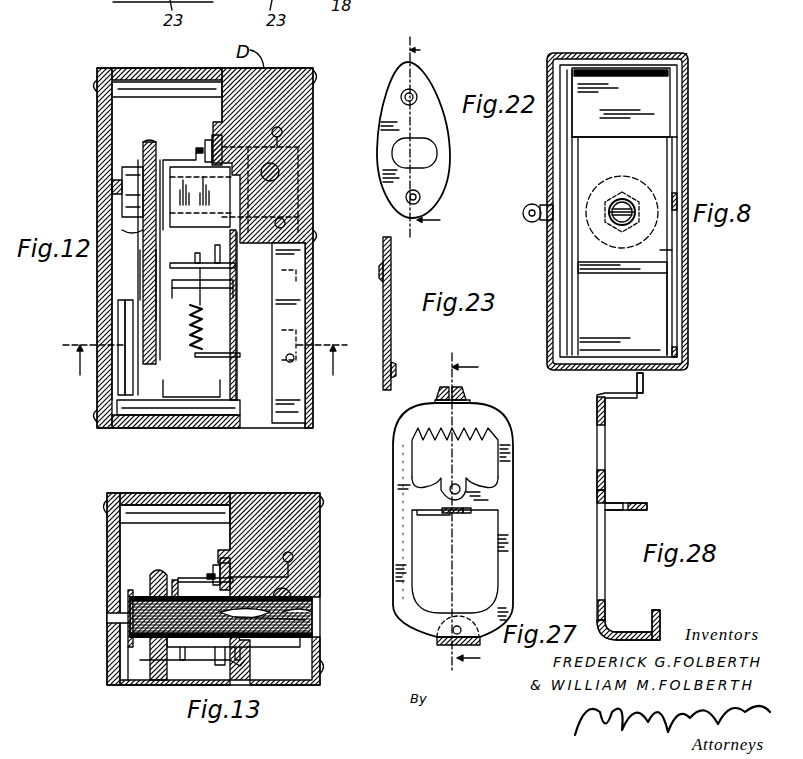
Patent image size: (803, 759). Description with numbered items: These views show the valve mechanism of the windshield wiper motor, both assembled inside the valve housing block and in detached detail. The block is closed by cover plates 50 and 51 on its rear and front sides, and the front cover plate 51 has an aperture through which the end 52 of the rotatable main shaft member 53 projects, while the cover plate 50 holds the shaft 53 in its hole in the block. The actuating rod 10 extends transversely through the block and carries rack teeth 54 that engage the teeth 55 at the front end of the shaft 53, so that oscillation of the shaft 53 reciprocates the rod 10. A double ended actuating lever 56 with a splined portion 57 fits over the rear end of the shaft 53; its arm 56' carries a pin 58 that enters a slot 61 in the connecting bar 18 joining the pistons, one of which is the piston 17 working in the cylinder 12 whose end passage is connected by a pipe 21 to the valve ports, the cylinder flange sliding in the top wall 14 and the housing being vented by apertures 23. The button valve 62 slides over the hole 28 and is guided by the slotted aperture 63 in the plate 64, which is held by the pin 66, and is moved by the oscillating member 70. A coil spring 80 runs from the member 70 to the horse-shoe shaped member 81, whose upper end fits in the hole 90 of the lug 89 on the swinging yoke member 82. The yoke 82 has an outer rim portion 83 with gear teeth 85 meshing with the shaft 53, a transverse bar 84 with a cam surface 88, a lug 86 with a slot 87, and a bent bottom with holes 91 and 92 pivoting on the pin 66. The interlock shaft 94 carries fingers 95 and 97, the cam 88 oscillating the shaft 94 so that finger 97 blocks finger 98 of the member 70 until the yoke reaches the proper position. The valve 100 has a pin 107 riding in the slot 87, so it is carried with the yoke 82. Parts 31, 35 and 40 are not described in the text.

In FIG. 12, the actuating rod 10 is at (313, 156).
In FIG. 13, the actuating rod 10 is at (312, 580).
In FIG. 8, the cylinder 12 is at (630, 53).
In FIG. 12, the top wall 14 is at (204, 364).
In FIG. 8, the piston 17 is at (645, 110).
In FIG. 12, the connecting bar 18 is at (145, 288).
In FIG. 13, the connecting bar 18 is at (128, 676).
In FIG. 8, the connecting bar 18 is at (688, 200).
In FIG. 8, the pipe 21 is at (528, 222).
In FIG. 22, the aperture 23 is at (425, 139).
In FIG. 27, the hole 28 is at (469, 514).
In FIG. 12, the wall 31 is at (313, 190).
In FIG. 12, the screw 35 is at (282, 132).
In FIG. 13, the screw 35 is at (293, 557).
In FIG. 12, the plate 40 is at (305, 243).
In FIG. 12, the cover plate 50 is at (313, 108).
In FIG. 13, the cover plate 50 is at (321, 522).
In FIG. 12, the cover plate 51 is at (97, 134).
In FIG. 13, the cover plate 51 is at (107, 528).
In FIG. 12, the end of main shaft 52 is at (112, 188).
In FIG. 13, the end of main shaft 52 is at (107, 618).
In FIG. 12, the main shaft member 53 is at (147, 170).
In FIG. 13, the main shaft member 53 is at (250, 625).
In FIG. 12, the teeth 54 is at (279, 172).
In FIG. 13, the teeth 54 is at (312, 612).
In FIG. 13, the teeth 55 is at (312, 634).
In FIG. 12, the actuating lever 56 is at (95, 200).
In FIG. 12, the arm of actuating lever 56' is at (97, 347).
In FIG. 13, the splined portion 57 is at (150, 585).
In FIG. 12, the pin 58 is at (128, 340).
In FIG. 8, the slot 61 is at (668, 308).
In FIG. 12, the button valve 62 is at (236, 360).
In FIG. 22, the slotted aperture 63 is at (392, 148).
In FIG. 23, the slotted aperture 63 is at (383, 326).
In FIG. 12, the plate 64 is at (238, 300).
In FIG. 22, the plate 64 is at (388, 128).
In FIG. 23, the plate 64 is at (383, 292).
In FIG. 12, the pin 66 is at (182, 397).
In FIG. 12, the oscillating member 70 is at (226, 282).
In FIG. 12, the coil spring 80 is at (205, 357).
In FIG. 12, the horse-shoe shaped member 81 is at (198, 300).
In FIG. 12, the yoke member 82 is at (153, 310).
In FIG. 27, the yoke member 82 is at (393, 465).
In FIG. 27, the rim portion 83 is at (393, 552).
In FIG. 28, the rim portion 83 is at (607, 440).
In FIG. 27, the transverse bar 84 is at (498, 520).
In FIG. 28, the transverse bar 84 is at (597, 492).
In FIG. 27, the gear teeth 85 is at (470, 433).
In FIG. 12, the lug 86 is at (212, 150).
In FIG. 13, the lug 86 is at (222, 565).
In FIG. 27, the lug 86 is at (467, 388).
In FIG. 28, the lug 86 is at (643, 380).
In FIG. 13, the slot 87 is at (180, 577).
In FIG. 27, the slot 87 is at (436, 391).
In FIG. 28, the slot 87 is at (597, 397).
In FIG. 27, the cam surface 88 is at (452, 485).
In FIG. 28, the cam surface 88 is at (597, 472).
In FIG. 12, the lug 89 is at (194, 280).
In FIG. 27, the lug 89 is at (448, 515).
In FIG. 28, the lug 89 is at (612, 507).
In FIG. 27, the hole 90 is at (460, 514).
In FIG. 28, the hole 90 is at (640, 507).
In FIG. 27, the hole 91 is at (450, 634).
In FIG. 28, the hole 91 is at (610, 622).
In FIG. 28, the hole 92 is at (660, 625).
In FIG. 12, the shaft 94 is at (186, 263).
In FIG. 13, the shaft 94 is at (202, 647).
In FIG. 13, the finger 95 is at (185, 660).
In FIG. 12, the finger 97 is at (206, 248).
In FIG. 13, the finger 97 is at (220, 665).
In FIG. 12, the finger 98 is at (222, 246).
In FIG. 12, the valve 100 is at (208, 140).
In FIG. 13, the valve 100 is at (216, 565).
In FIG. 12, the pin 107 is at (196, 152).
In FIG. 13, the pin 107 is at (207, 576).